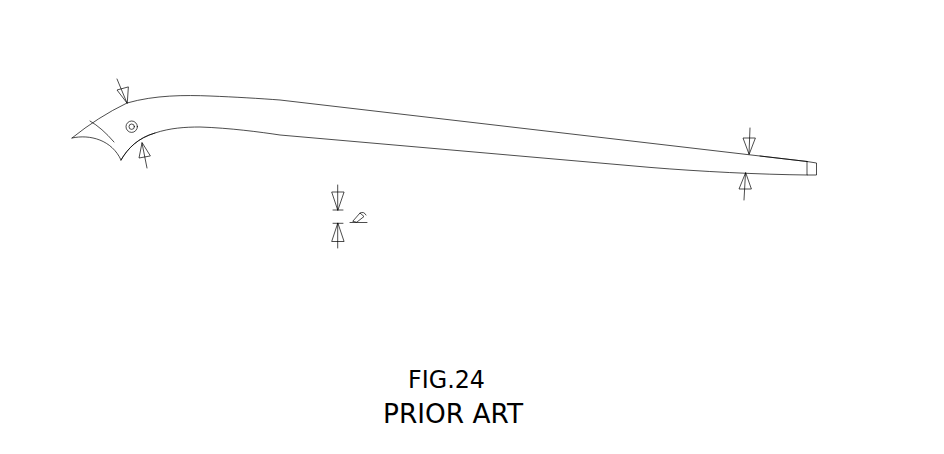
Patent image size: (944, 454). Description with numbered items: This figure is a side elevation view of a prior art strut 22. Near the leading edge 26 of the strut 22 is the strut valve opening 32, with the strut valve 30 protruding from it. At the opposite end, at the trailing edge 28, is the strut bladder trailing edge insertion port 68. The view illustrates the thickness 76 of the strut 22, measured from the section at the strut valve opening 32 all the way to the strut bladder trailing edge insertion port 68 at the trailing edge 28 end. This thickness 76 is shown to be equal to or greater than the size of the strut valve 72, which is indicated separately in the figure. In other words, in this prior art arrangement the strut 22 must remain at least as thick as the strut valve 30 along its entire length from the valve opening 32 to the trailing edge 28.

The strut 22 is at (457, 137).
The leading edge 26 is at (67, 125).
The trailing edge 28 is at (798, 150).
The strut valve 30 is at (136, 122).
The strut valve opening 32 is at (138, 130).
The strut bladder trailing edge insertion port 68 is at (818, 168).
The size of the strut valve 72 is at (333, 213).
The thickness of the strut 76 is at (104, 135).